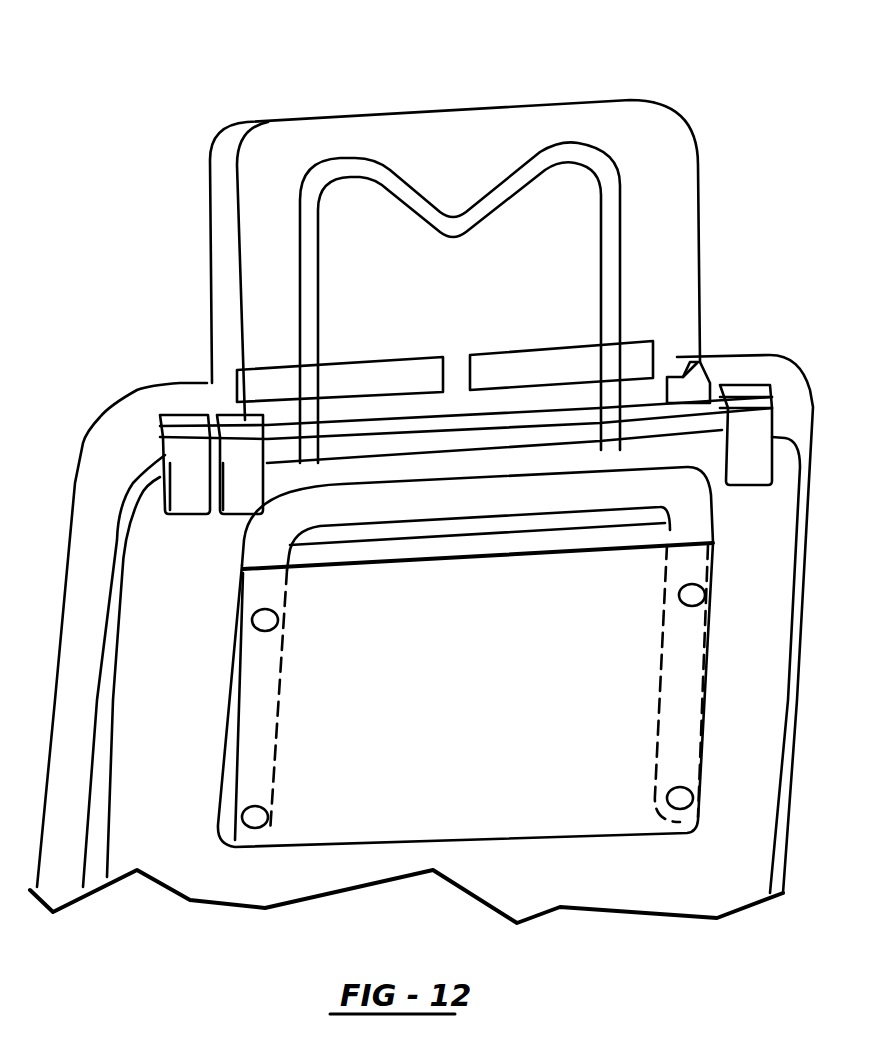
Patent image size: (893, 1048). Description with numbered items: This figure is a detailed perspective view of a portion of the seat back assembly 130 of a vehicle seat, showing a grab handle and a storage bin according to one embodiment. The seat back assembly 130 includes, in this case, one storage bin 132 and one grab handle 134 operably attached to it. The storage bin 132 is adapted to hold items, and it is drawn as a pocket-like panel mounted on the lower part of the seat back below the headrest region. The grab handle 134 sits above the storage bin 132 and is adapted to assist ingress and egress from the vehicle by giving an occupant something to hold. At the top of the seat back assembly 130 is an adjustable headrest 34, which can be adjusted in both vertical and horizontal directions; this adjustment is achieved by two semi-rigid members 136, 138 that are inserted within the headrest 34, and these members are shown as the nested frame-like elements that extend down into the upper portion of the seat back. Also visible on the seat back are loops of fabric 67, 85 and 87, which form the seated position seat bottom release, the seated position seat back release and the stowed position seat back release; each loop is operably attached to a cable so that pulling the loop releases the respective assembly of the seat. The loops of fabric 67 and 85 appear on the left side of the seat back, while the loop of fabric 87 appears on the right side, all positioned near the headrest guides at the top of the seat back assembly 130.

The seat back assembly 130 is at (139, 156).
The adjustable headrest 34 is at (478, 258).
The semi-rigid member 136 is at (613, 220).
The semi-rigid member 138 is at (538, 367).
The storage bin 132 is at (502, 556).
The grab handle 134 is at (280, 527).
The loop of fabric 67 is at (187, 495).
The loop of fabric 85 is at (240, 502).
The loop of fabric 87 is at (750, 470).